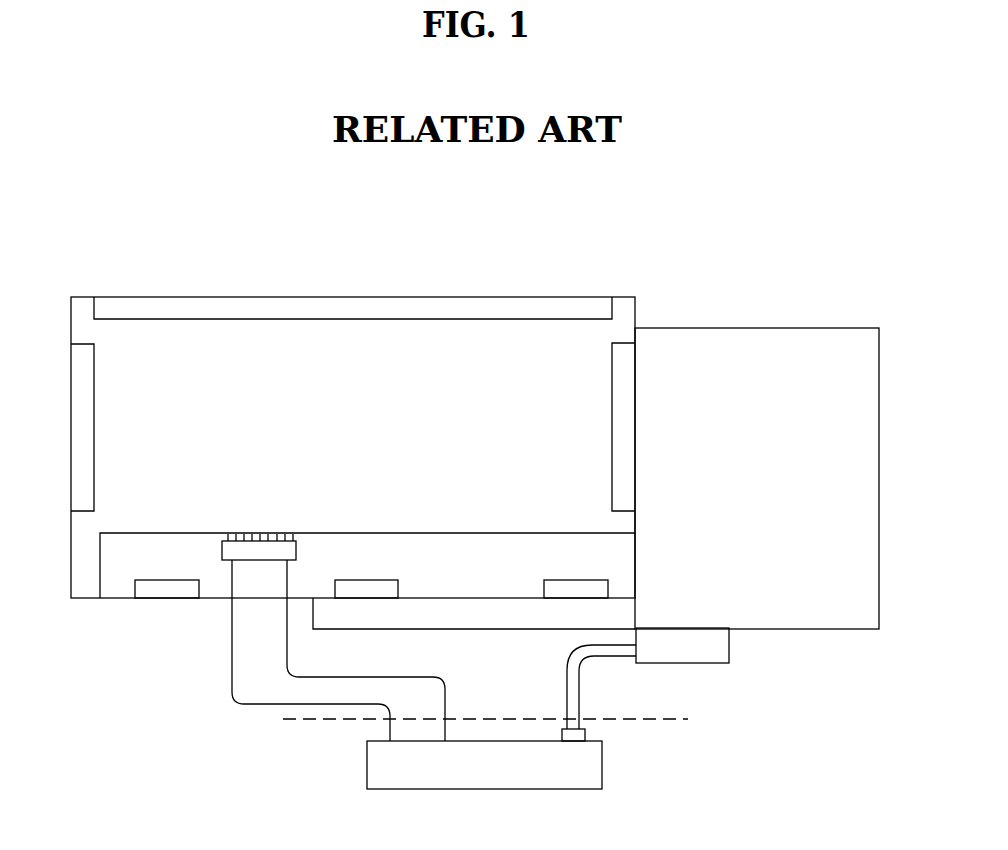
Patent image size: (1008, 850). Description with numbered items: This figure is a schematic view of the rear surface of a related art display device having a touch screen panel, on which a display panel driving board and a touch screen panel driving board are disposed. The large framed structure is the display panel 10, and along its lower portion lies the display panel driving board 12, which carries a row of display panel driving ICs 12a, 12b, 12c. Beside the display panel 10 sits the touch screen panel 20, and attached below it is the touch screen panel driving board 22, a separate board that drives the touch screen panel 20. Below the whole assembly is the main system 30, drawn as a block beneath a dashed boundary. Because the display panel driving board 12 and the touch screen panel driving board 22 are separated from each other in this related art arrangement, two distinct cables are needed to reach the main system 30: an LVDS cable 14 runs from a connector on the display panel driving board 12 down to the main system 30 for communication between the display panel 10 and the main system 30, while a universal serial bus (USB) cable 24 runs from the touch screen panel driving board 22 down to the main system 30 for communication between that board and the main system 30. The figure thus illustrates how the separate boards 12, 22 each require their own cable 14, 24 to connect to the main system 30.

The display panel 10 is at (636, 296).
The touch screen panel 20 is at (814, 327).
The display panel driving board 12 is at (110, 610).
The display panel driving IC 12a is at (156, 590).
The display panel driving IC 12b is at (360, 590).
The display panel driving IC 12c is at (562, 590).
The LVDS cable 14 is at (240, 690).
The touch screen panel driving board 22 is at (722, 648).
The universal serial bus (USB) cable 24 is at (573, 695).
The main system 30 is at (484, 765).